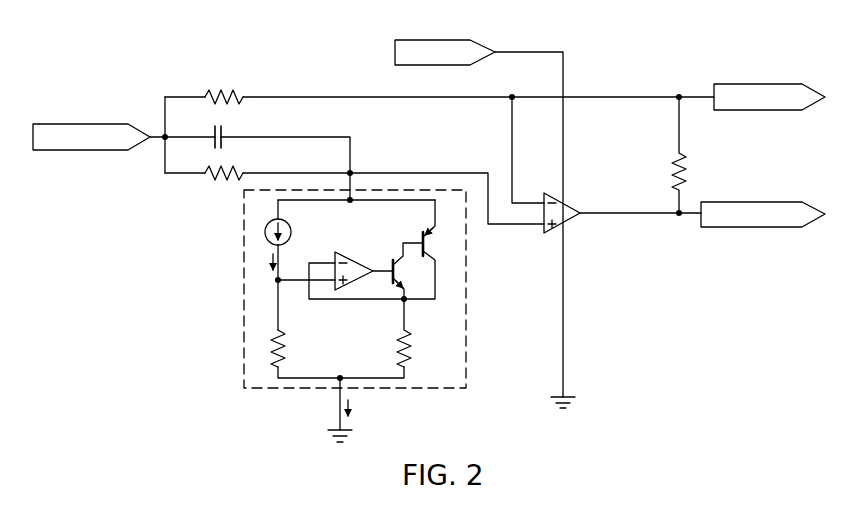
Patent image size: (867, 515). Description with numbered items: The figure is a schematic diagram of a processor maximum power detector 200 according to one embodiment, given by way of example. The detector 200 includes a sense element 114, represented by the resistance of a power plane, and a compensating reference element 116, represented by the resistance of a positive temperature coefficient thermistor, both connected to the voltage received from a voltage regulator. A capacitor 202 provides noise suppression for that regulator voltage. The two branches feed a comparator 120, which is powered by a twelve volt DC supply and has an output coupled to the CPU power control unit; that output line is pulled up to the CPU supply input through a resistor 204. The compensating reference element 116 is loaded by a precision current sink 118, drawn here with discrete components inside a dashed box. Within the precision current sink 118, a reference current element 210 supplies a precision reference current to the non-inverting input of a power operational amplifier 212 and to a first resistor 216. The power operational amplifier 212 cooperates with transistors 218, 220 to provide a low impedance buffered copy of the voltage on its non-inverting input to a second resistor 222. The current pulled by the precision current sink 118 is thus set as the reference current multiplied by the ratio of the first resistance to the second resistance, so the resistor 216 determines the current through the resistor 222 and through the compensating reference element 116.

The processor maximum power detector 200 is at (207, 35).
The sense element 114 is at (240, 92).
The capacitor 202 is at (222, 131).
The compensating reference element 116 is at (212, 178).
The comparator 120 is at (565, 207).
The resistor 204 is at (683, 165).
The precision current sink 118 is at (244, 347).
The reference current element 210 is at (265, 231).
The power operational amplifier 212 is at (345, 254).
The transistor 220 is at (393, 262).
The transistor 218 is at (425, 244).
The resistor 216 is at (275, 337).
The resistor 222 is at (410, 343).